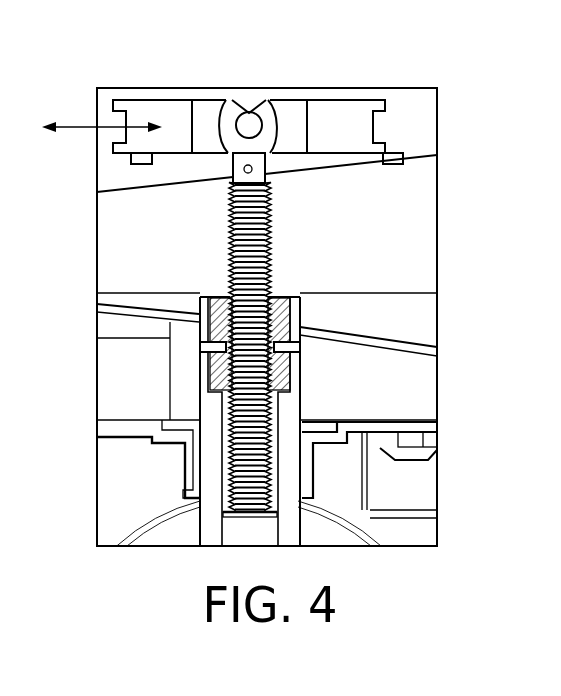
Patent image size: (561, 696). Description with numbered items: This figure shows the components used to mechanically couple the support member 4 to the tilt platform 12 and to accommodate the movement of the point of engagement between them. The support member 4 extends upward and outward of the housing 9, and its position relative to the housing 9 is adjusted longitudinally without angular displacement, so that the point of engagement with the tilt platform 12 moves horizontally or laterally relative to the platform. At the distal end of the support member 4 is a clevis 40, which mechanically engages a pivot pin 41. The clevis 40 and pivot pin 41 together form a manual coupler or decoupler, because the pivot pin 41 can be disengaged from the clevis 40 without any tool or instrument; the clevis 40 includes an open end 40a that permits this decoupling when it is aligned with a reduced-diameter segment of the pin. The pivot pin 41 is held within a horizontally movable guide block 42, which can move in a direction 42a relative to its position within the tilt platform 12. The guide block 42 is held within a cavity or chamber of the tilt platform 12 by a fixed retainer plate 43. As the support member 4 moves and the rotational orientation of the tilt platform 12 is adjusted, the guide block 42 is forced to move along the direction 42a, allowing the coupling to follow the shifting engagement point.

The support member 4 is at (229, 242).
The housing 9 is at (181, 469).
The tilt platform 12 is at (412, 103).
The clevis 40 is at (267, 122).
The open end 40a is at (226, 85).
The pivot pin 41 is at (250, 122).
The horizontally movable guide block 42 is at (143, 100).
The direction 42a is at (78, 125).
The fixed retainer plate 43 is at (347, 156).